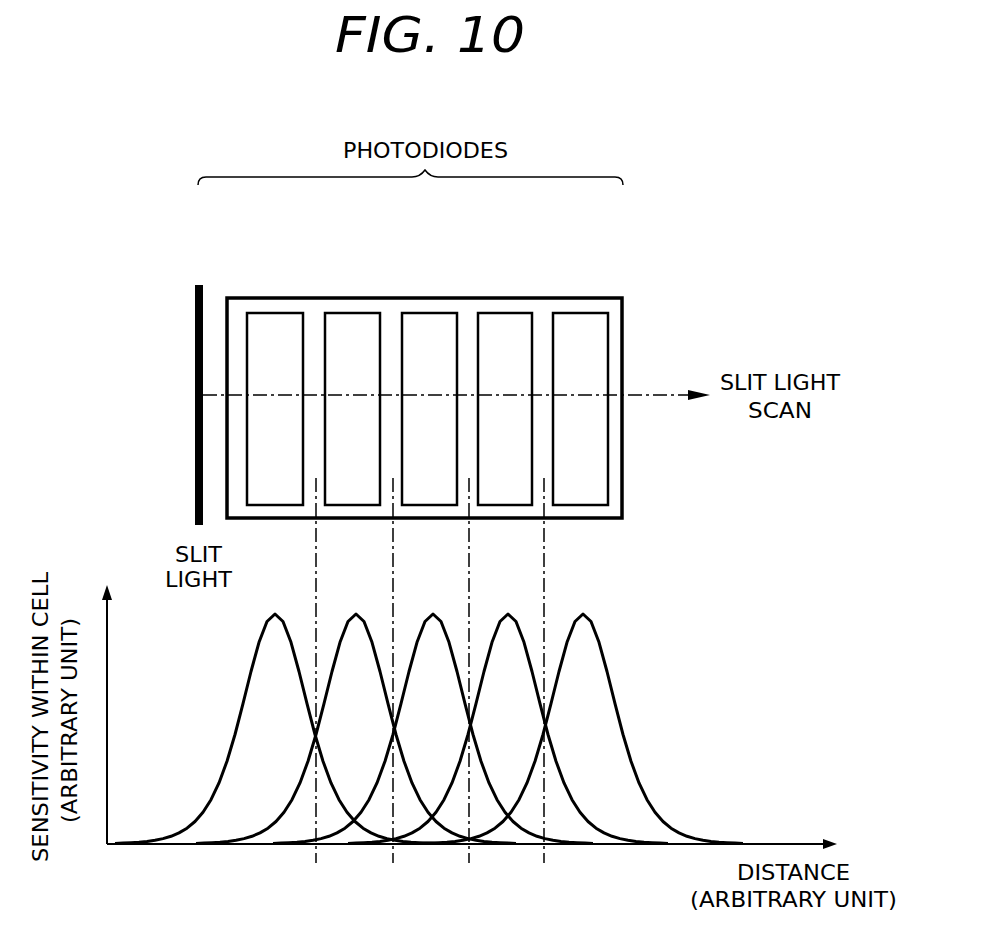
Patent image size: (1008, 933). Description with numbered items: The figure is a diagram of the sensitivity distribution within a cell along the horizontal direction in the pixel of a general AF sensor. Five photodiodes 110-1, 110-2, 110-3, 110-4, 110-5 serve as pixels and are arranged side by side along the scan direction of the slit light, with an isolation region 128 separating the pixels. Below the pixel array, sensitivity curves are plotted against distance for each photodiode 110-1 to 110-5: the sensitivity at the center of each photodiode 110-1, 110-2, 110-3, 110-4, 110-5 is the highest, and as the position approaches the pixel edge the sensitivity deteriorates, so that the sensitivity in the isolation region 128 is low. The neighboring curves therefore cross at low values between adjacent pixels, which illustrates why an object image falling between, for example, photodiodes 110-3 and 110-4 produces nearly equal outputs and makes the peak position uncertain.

The photodiode 110-1 is at (270, 327).
The photodiode 110-2 is at (348, 327).
The photodiode 110-3 is at (430, 327).
The photodiode 110-4 is at (507, 327).
The photodiode 110-5 is at (577, 327).
The isolation region 128 is at (622, 497).